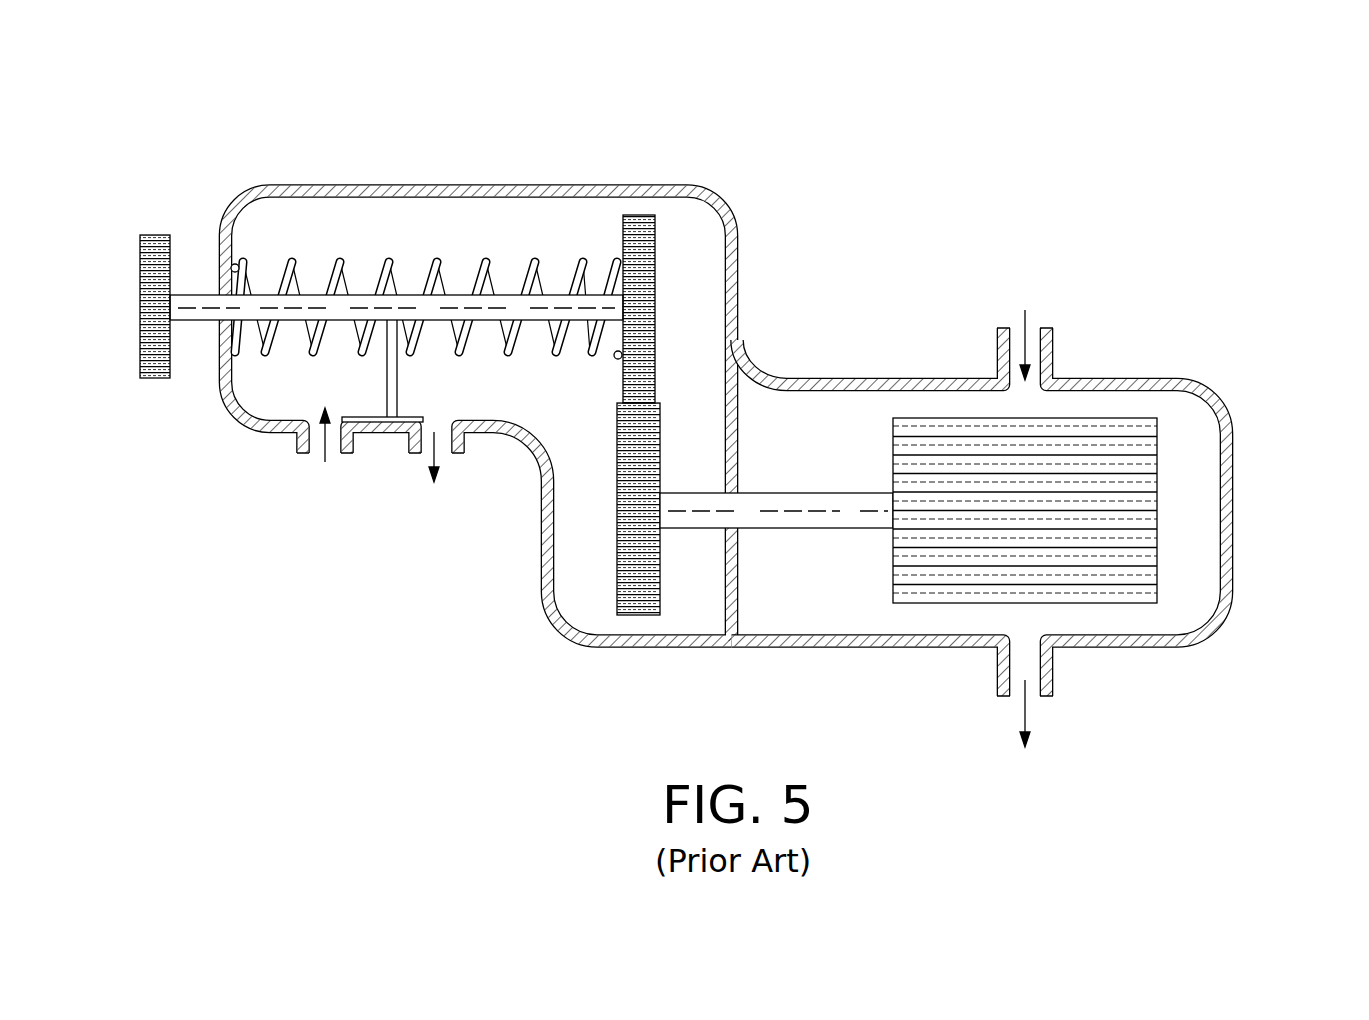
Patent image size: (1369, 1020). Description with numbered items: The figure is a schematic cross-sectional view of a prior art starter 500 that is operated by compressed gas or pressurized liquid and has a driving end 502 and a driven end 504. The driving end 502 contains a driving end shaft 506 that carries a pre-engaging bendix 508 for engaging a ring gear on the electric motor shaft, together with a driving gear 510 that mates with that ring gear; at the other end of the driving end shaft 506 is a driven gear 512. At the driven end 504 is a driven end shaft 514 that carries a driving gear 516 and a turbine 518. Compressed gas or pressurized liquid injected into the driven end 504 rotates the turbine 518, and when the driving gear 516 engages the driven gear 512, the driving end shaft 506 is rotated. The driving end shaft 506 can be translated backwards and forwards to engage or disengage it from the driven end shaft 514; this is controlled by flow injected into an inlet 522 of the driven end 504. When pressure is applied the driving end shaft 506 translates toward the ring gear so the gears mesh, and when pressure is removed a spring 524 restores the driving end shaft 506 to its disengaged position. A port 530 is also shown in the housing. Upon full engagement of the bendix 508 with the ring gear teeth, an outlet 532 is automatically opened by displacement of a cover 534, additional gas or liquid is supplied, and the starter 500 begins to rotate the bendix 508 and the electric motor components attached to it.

The starter 500 is at (707, 414).
The driving end 502 is at (416, 160).
The driven end 504 is at (1268, 458).
The driving end shaft 506 is at (198, 258).
The pre-engaging bendix 508 is at (195, 312).
The driving gear 510 is at (157, 370).
The driven gear 512 is at (645, 291).
The driven end shaft 514 is at (795, 503).
The driving gear 516 is at (637, 598).
The turbine 518 is at (1106, 589).
The inlet 522 is at (1036, 320).
The spring 524 is at (350, 270).
The inlet port 530 is at (340, 462).
The outlet 532 is at (452, 462).
The cover 534 is at (397, 388).